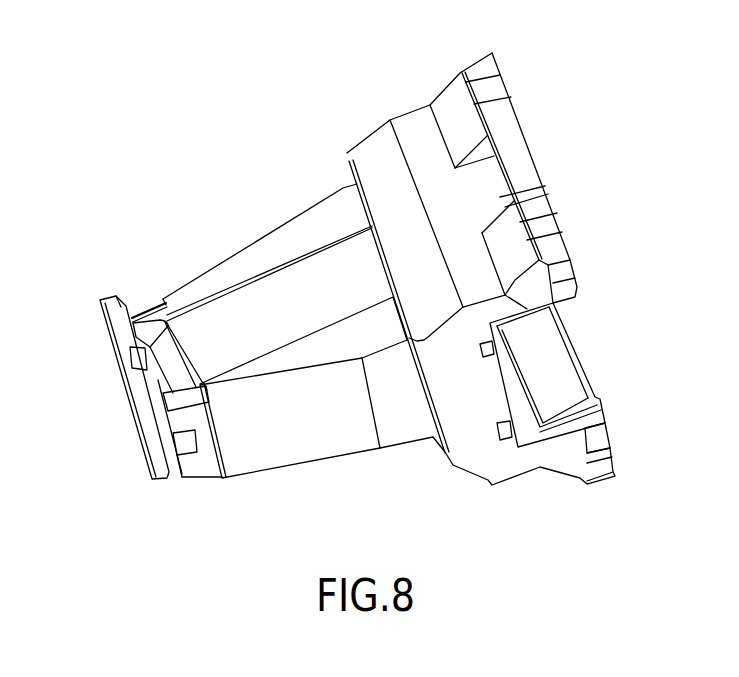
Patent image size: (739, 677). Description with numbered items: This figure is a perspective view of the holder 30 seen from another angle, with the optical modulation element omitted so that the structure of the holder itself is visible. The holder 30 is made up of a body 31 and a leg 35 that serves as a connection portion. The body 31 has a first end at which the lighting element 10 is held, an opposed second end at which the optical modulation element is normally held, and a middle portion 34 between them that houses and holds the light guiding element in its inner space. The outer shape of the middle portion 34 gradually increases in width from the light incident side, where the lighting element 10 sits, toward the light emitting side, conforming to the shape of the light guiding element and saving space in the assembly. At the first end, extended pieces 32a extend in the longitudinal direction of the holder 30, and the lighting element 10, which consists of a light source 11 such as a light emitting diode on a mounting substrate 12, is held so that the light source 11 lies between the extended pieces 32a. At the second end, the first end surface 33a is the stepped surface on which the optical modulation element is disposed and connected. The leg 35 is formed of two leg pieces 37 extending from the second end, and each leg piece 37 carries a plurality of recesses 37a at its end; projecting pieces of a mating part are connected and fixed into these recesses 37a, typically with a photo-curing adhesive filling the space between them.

The lighting element 10 is at (63, 233).
The light source 11 is at (155, 347).
The mounting substrate 12 is at (110, 307).
The holder 30 is at (300, 168).
The body 31 is at (332, 467).
The extended pieces 32a is at (199, 466).
The first end surface 33a is at (503, 375).
The middle portion 34 is at (247, 252).
The leg 35 is at (522, 477).
The leg pieces 37 is at (512, 143).
The recesses 37a is at (563, 273).